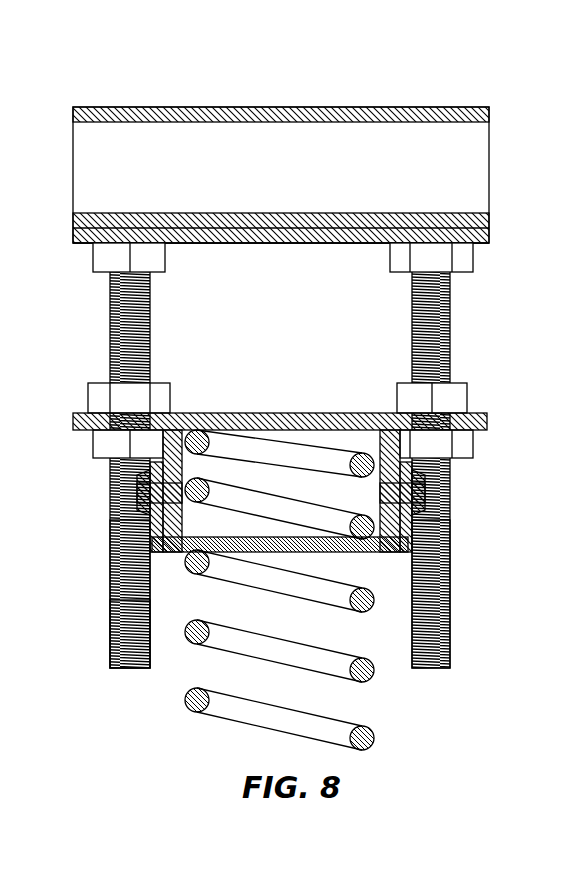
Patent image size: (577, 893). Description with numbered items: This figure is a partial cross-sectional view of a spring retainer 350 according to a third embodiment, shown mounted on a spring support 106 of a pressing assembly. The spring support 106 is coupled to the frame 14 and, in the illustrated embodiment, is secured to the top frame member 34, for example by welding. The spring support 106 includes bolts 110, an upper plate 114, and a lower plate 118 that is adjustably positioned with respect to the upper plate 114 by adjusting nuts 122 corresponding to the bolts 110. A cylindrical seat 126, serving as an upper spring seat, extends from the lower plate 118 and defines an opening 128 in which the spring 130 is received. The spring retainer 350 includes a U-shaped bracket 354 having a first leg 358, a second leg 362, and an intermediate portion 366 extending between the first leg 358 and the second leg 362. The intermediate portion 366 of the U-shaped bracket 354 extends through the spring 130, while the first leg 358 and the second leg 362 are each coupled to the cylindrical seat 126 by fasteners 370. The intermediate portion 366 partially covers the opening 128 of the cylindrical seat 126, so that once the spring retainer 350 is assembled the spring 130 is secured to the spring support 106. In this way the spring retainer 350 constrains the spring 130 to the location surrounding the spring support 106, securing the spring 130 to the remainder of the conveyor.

The frame 14 is at (281, 152).
The top frame member 34 is at (248, 107).
The upper plate 114 is at (275, 243).
The bolts 110 is at (113, 305).
The nuts 122 is at (96, 395).
The lower plate 118 is at (78, 422).
The fasteners 370 is at (110, 487).
The spring support 106 is at (80, 521).
The second leg 362 is at (110, 538).
The cylindrical seat 126 is at (185, 552).
The opening 128 is at (113, 625).
The spring 130 is at (187, 698).
The U-shaped bracket 354 is at (280, 590).
The intermediate portion 366 is at (390, 553).
The first leg 358 is at (452, 543).
The spring retainer 350 is at (469, 588).